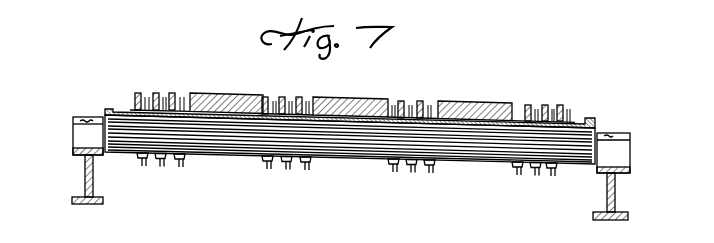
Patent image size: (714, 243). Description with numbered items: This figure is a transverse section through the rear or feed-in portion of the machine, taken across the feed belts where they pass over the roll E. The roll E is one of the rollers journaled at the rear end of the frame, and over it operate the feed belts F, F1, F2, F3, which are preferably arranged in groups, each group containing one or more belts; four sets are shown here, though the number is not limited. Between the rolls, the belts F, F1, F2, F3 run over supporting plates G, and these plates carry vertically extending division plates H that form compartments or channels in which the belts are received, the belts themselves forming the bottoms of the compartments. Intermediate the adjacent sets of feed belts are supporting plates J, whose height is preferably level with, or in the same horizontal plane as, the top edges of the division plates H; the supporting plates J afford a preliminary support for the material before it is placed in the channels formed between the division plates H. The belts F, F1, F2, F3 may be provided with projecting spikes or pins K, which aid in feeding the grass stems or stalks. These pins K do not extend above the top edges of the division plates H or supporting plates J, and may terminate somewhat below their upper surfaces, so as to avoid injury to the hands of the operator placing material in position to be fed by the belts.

The roll E is at (358, 140).
The supporting plate G is at (113, 108).
The supporting plate J is at (217, 93).
The division plate H is at (299, 97).
The spikes or pins K is at (164, 98).
The feed belt F is at (181, 167).
The feed belt F1 is at (306, 170).
The feed belt F2 is at (430, 173).
The feed belt F3 is at (553, 176).